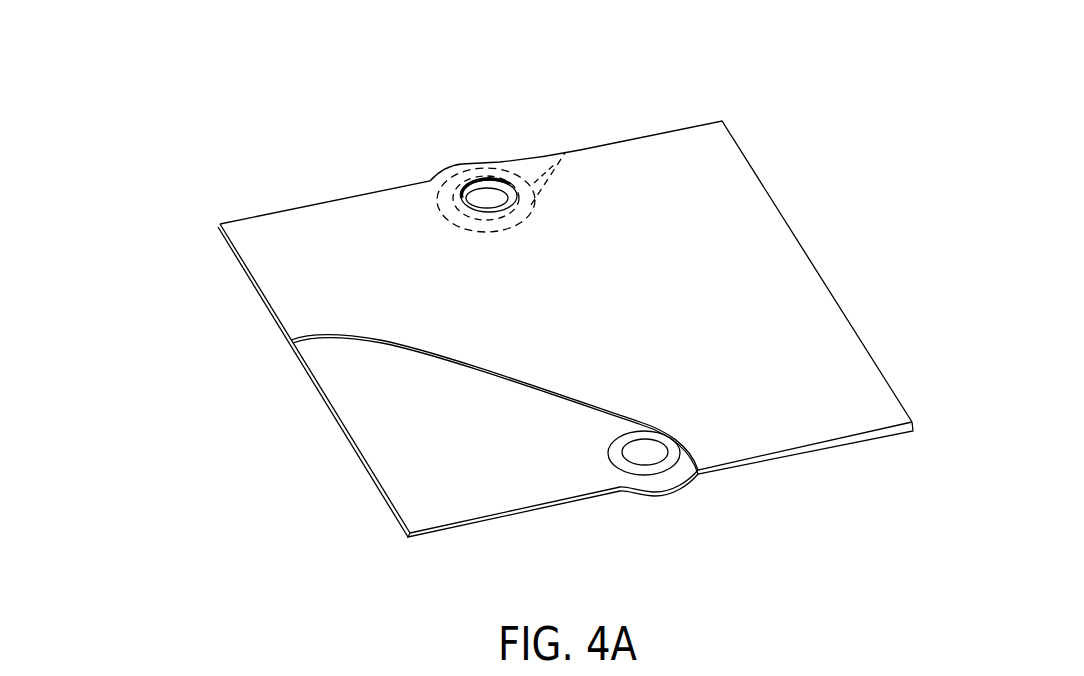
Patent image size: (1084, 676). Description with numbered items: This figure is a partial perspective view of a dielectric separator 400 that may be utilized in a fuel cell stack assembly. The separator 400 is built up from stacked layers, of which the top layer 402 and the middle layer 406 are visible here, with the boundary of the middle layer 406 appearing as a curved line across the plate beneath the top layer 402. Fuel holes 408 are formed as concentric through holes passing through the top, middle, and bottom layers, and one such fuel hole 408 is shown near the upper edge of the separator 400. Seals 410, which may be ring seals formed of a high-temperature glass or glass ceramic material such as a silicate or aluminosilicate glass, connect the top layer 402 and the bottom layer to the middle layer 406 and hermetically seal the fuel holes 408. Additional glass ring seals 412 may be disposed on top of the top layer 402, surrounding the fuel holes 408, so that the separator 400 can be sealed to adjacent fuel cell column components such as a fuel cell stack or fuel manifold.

The dielectric separator 400 is at (150, 154).
The top layer 402 is at (337, 263).
The middle layer 406 is at (340, 362).
The fuel holes 408 is at (480, 190).
The seals 410 is at (678, 461).
The additional glass ring seals 412 is at (564, 154).